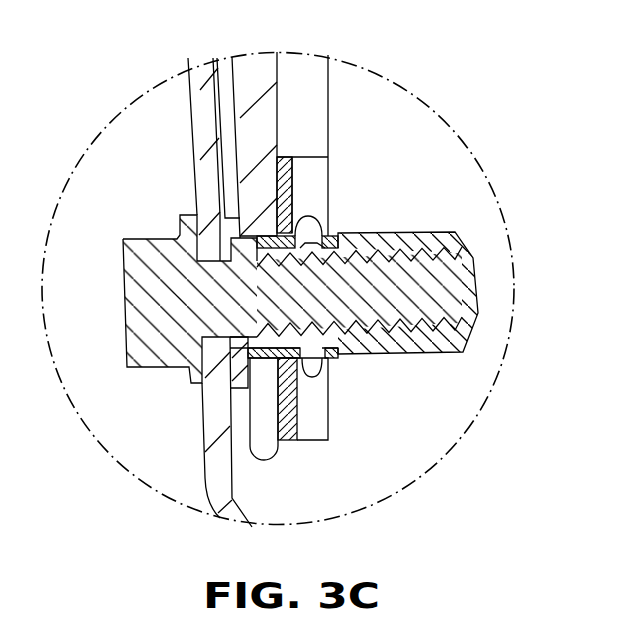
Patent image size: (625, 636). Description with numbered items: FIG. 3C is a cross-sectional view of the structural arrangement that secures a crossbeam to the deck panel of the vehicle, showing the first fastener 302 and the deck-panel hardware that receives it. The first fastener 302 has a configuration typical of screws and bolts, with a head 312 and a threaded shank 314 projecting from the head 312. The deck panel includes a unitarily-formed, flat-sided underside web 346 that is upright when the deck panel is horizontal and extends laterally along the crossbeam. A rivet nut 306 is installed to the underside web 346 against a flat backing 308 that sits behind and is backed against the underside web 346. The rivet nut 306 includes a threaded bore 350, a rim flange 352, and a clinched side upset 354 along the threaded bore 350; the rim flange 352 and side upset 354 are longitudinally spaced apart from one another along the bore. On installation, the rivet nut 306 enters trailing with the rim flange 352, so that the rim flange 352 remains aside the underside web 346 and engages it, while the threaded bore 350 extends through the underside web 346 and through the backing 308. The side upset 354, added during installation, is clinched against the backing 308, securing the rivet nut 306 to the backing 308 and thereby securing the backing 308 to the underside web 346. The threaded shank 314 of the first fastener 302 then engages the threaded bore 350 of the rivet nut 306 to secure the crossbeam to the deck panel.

The first fastener 302 is at (297, 393).
The rivet nut 306 is at (312, 212).
The backing 308 is at (292, 172).
The head 312 is at (158, 368).
The threaded shank 314 is at (327, 355).
The underside web 346 is at (277, 143).
The threaded bore 350 is at (360, 230).
The rim flange 352 is at (292, 190).
The side upset 354 is at (296, 236).